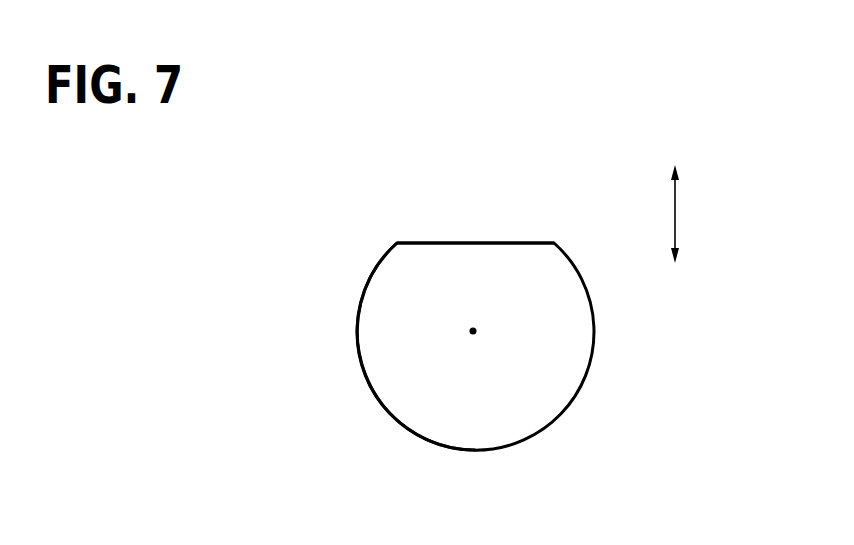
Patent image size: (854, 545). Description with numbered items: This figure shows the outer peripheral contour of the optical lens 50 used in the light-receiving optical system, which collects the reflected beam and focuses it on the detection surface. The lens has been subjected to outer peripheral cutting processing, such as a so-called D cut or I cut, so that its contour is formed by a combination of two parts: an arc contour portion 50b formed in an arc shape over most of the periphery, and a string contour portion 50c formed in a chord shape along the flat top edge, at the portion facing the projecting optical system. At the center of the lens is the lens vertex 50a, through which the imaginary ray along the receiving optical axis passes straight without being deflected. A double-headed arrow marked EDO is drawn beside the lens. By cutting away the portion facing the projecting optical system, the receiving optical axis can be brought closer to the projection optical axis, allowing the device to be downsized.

The optical lens 50 is at (361, 213).
The string contour portion 50c is at (460, 243).
The arc contour portion 50b is at (357, 335).
The lens vertex 50a is at (475, 334).
The eccentric direction EDO is at (675, 215).